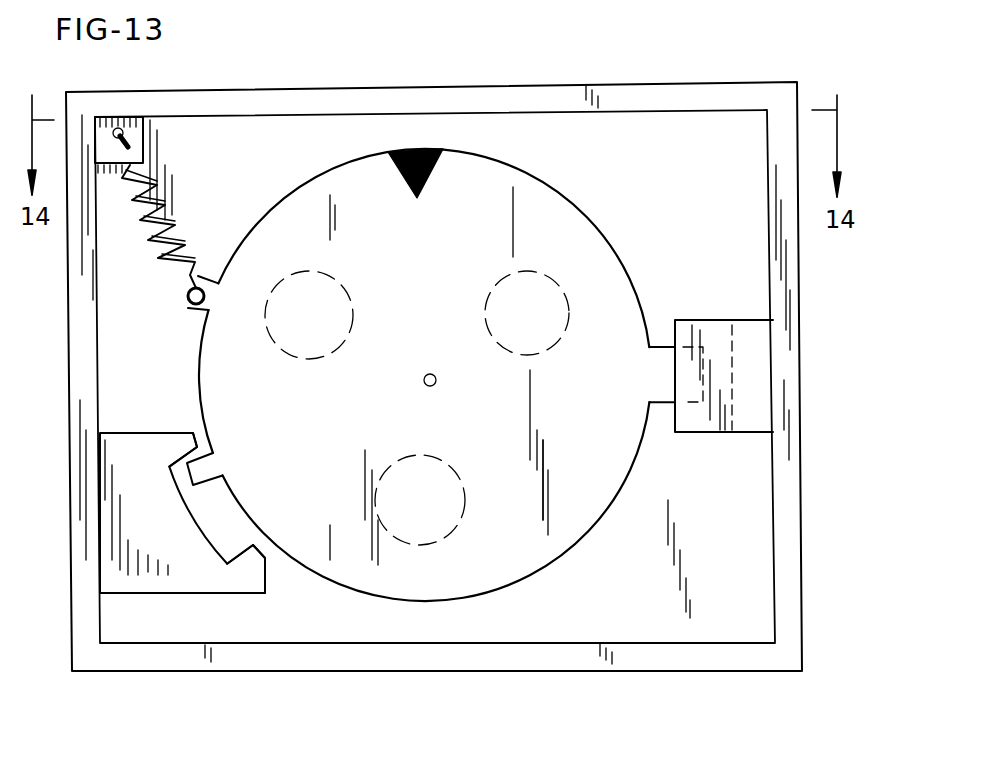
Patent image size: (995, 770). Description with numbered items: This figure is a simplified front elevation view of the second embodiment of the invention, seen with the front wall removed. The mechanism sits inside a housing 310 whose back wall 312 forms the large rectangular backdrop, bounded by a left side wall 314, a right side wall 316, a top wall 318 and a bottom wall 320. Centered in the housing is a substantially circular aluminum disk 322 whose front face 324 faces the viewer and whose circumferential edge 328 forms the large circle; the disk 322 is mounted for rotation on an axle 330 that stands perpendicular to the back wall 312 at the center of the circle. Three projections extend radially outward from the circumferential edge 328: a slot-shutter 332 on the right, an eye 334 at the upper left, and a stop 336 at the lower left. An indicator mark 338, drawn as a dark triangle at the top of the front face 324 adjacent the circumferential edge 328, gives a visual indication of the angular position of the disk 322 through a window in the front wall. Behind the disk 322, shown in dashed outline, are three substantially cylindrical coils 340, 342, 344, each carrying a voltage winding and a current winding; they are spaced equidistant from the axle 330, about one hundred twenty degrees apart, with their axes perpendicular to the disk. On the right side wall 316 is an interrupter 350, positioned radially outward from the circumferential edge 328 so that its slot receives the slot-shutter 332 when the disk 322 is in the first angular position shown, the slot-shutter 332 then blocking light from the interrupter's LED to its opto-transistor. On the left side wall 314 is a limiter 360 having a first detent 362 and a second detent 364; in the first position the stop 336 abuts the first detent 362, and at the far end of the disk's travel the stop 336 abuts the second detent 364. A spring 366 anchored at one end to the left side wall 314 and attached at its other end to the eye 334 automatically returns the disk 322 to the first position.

The housing 310 is at (801, 278).
The back wall 312 is at (742, 560).
The left side wall 314 is at (66, 305).
The right side wall 316 is at (801, 392).
The top wall 318 is at (390, 90).
The bottom wall 320 is at (603, 672).
The aluminum disk 322 is at (566, 197).
The front face 324 is at (600, 488).
The circumferential edge 328 is at (622, 258).
The axle 330 is at (436, 386).
The slot-shutter 332 is at (658, 357).
The eye 334 is at (196, 312).
The stop 336 is at (216, 468).
The indicator mark 338 is at (400, 152).
The coil 340 is at (277, 342).
The coil 342 is at (500, 285).
The coil 344 is at (466, 495).
The interrupter 350 is at (752, 423).
The limiter 360 is at (175, 540).
The first detent 362 is at (180, 440).
The second detent 364 is at (265, 565).
The spring 366 is at (148, 246).